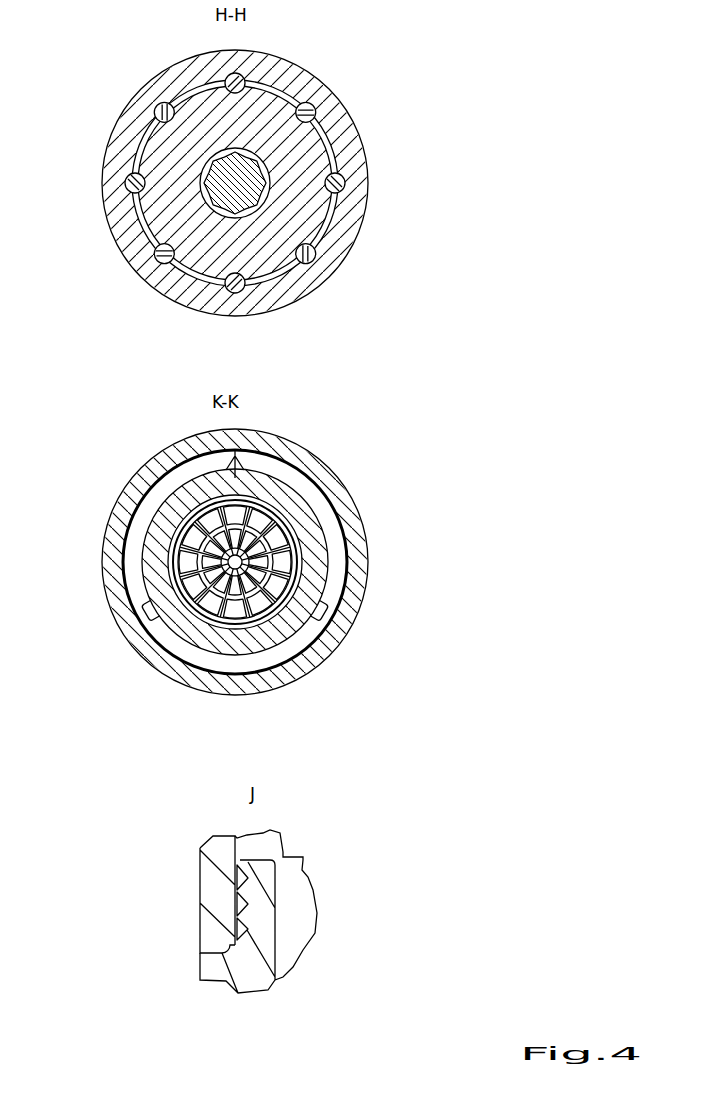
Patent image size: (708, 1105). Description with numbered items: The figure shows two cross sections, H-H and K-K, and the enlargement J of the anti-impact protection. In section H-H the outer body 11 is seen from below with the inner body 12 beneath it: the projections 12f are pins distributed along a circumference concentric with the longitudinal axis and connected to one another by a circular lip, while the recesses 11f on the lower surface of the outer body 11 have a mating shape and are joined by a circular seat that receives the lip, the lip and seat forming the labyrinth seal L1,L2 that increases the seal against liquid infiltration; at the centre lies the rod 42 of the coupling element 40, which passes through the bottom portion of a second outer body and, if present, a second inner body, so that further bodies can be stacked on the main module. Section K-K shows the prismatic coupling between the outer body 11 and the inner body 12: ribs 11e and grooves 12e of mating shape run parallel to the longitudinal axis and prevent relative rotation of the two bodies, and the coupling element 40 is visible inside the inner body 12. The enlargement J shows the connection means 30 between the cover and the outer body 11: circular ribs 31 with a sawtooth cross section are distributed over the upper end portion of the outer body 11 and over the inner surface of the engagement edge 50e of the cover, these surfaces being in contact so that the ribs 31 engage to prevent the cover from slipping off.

The outer body 11 is at (195, 115).
The recesses and/or projections 11f is at (128, 182).
The recesses and/or projections 12f is at (140, 205).
The rod 42 is at (268, 176).
The labyrinth seal L1,L2 is at (327, 225).
The ribs 11e is at (147, 615).
The inner body 12 is at (320, 500).
The grooves 12e is at (153, 610).
The coupling element 40 is at (313, 614).
The connection means 30 is at (225, 882).
The circular ribs 31 is at (247, 912).
The engagement edge 50e is at (213, 902).